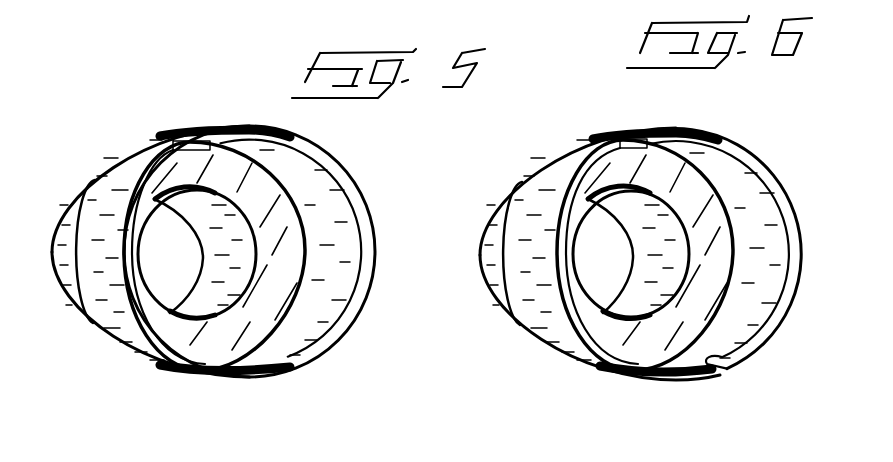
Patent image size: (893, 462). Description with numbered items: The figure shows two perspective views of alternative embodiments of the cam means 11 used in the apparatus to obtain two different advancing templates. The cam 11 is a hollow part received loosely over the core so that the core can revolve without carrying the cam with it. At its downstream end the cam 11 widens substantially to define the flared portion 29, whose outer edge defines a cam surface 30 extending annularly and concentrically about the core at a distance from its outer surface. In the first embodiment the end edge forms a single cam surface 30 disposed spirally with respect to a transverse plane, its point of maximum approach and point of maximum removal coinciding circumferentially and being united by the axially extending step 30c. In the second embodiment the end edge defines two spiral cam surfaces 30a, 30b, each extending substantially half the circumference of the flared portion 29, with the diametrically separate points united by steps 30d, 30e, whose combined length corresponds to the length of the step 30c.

In FIG. 5, the cam means 11 is at (62, 218).
In FIG. 6, the cam means 11 is at (490, 262).
In FIG. 5, the flared portion 29 is at (128, 333).
In FIG. 6, the flared portion 29 is at (553, 168).
In FIG. 5, the cam surface 30 is at (352, 188).
In FIG. 6, the cam surface 30a is at (565, 267).
In FIG. 6, the cam surface 30b is at (797, 223).
In FIG. 5, the step 30c is at (191, 142).
In FIG. 6, the step 30d is at (633, 137).
In FIG. 6, the step 30e is at (722, 364).